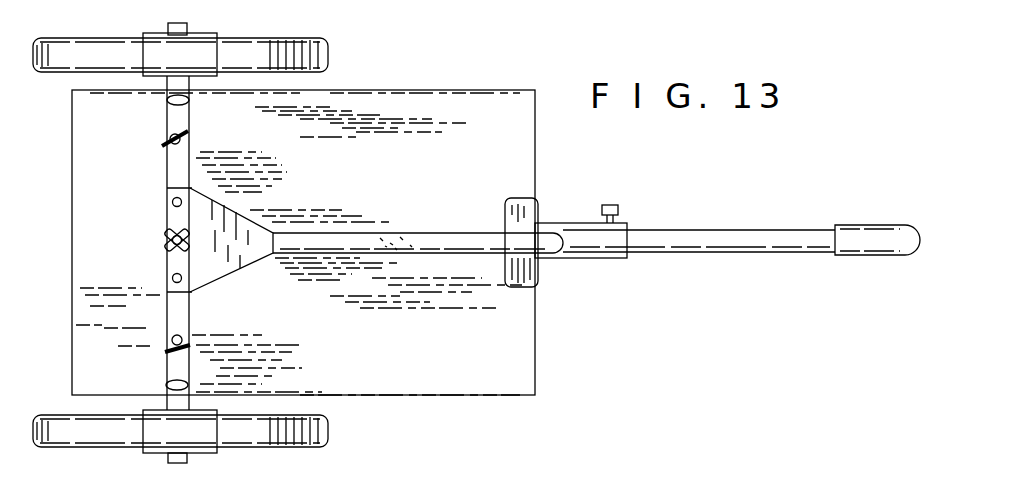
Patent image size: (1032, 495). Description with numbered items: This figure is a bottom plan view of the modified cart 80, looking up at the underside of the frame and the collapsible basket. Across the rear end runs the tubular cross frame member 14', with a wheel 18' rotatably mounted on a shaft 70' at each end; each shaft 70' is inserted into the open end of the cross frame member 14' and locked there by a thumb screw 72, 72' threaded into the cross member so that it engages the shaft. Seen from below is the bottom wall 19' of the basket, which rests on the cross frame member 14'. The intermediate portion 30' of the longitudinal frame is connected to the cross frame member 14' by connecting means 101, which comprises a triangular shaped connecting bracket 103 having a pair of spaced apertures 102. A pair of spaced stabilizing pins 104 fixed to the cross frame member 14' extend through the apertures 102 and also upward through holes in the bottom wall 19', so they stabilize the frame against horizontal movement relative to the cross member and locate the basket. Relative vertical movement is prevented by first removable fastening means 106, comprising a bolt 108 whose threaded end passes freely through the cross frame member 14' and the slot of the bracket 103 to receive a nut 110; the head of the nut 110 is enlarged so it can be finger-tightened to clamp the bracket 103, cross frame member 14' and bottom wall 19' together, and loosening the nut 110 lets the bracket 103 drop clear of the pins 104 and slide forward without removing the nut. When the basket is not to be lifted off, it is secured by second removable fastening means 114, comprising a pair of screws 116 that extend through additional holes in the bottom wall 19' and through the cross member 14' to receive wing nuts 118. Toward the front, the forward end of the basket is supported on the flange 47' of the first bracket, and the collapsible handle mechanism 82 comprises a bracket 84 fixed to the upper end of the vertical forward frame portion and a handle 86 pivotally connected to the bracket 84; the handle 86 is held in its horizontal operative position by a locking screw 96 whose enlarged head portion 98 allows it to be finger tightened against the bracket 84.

The cross frame member 14' is at (136, 243).
The wheel 18' is at (206, 242).
The bottom wall 19' is at (418, 260).
The intermediate portion 30' is at (390, 260).
The flange 47' is at (549, 246).
The shaft 70' is at (204, 251).
The thumb screw 72 is at (147, 383).
The thumb screw 72' is at (202, 111).
The modified cart 80 is at (485, 69).
The collapsible handle mechanism 82 is at (787, 215).
The bracket 84 is at (612, 260).
The handle 86 is at (813, 238).
The locking screw 96 is at (641, 216).
The enlarged head portion 98 is at (614, 206).
The connecting means 101 is at (272, 285).
The spaced apertures 102 is at (193, 190).
The triangular shaped connecting bracket 103 is at (253, 227).
The stabilizing pins 104 is at (172, 200).
The first removable fastening means 106 is at (163, 257).
The bolt 108 is at (167, 240).
The nut 110 is at (170, 237).
The second removable fastening means 114 is at (156, 148).
The screws 116 is at (172, 137).
The wing nuts 118 is at (187, 148).